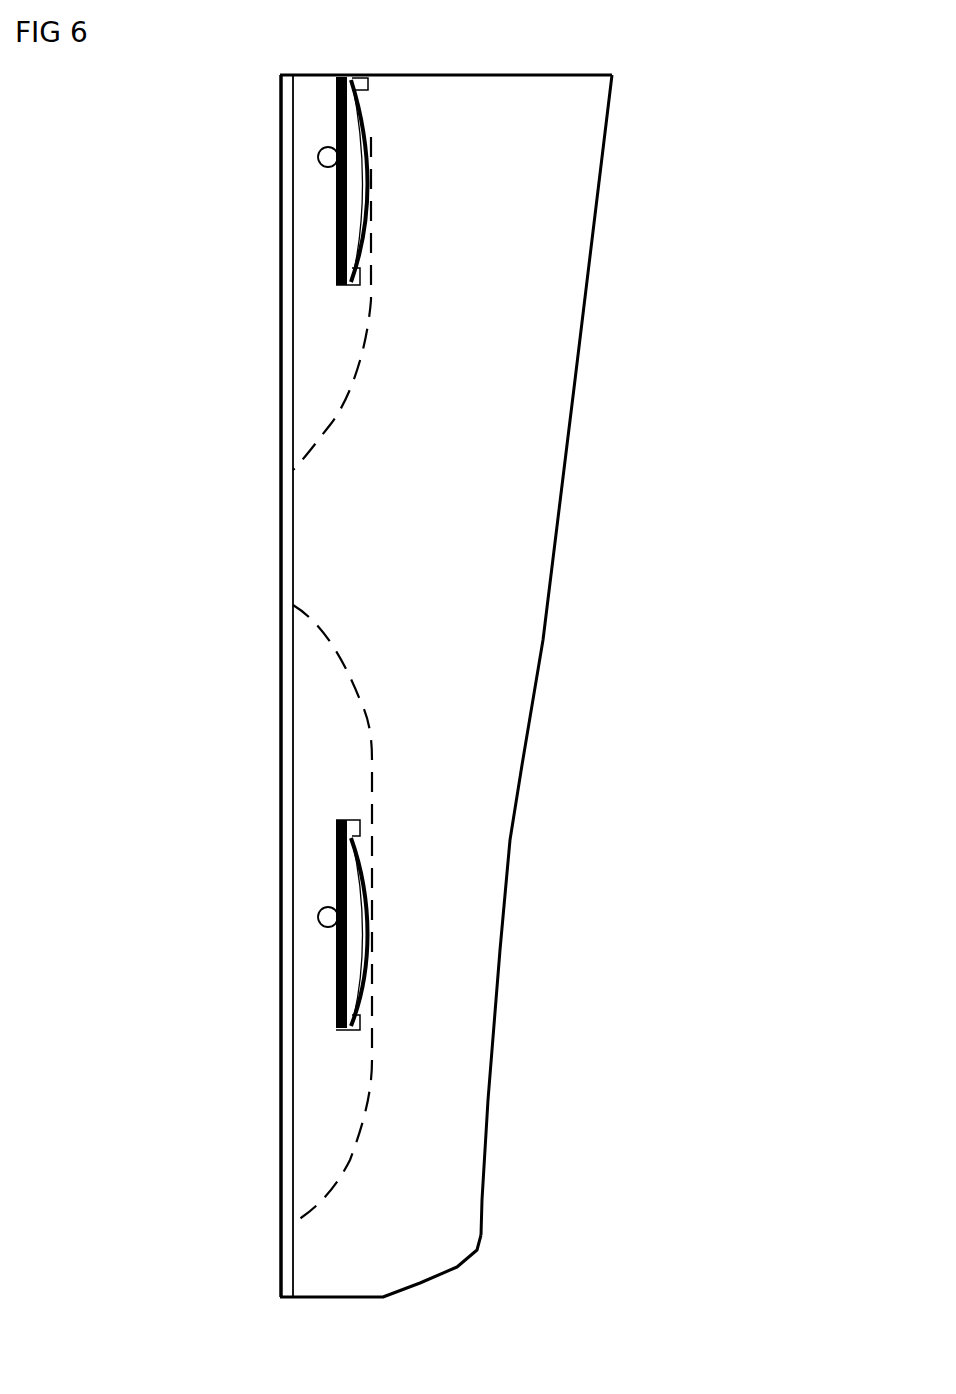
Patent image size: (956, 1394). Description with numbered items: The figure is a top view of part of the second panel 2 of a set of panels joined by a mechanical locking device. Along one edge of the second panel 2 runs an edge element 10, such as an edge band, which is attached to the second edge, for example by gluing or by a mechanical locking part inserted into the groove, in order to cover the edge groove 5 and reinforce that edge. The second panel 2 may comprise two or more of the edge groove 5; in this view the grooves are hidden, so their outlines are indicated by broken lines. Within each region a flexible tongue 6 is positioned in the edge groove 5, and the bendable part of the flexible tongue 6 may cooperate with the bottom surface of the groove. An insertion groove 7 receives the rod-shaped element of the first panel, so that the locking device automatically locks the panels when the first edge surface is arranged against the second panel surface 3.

The second panel 2 is at (652, 671).
The second panel surface 3 is at (505, 786).
The edge groove 5 is at (323, 314).
The flexible tongue 6 is at (336, 200).
The insertion groove 7 is at (328, 160).
The edge element 10 is at (288, 550).